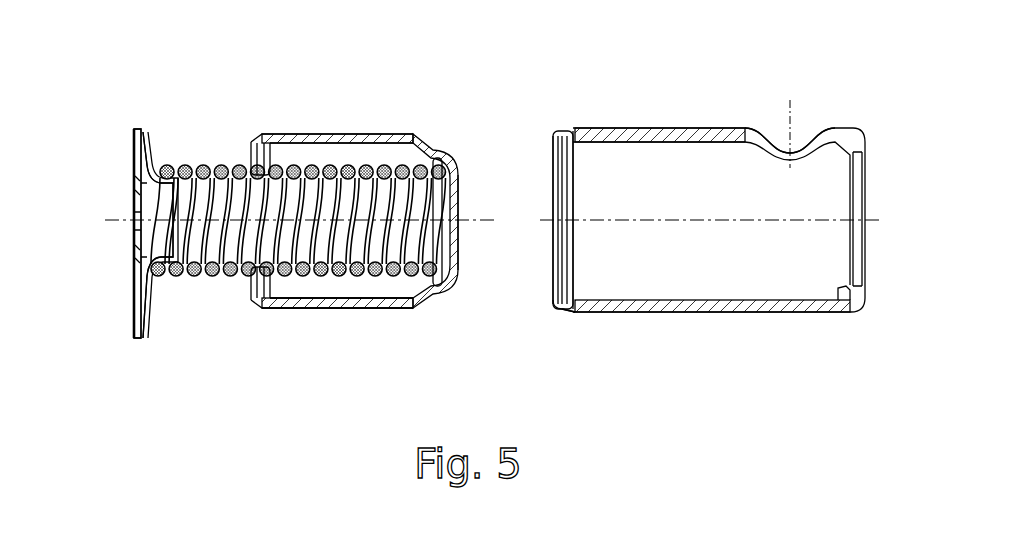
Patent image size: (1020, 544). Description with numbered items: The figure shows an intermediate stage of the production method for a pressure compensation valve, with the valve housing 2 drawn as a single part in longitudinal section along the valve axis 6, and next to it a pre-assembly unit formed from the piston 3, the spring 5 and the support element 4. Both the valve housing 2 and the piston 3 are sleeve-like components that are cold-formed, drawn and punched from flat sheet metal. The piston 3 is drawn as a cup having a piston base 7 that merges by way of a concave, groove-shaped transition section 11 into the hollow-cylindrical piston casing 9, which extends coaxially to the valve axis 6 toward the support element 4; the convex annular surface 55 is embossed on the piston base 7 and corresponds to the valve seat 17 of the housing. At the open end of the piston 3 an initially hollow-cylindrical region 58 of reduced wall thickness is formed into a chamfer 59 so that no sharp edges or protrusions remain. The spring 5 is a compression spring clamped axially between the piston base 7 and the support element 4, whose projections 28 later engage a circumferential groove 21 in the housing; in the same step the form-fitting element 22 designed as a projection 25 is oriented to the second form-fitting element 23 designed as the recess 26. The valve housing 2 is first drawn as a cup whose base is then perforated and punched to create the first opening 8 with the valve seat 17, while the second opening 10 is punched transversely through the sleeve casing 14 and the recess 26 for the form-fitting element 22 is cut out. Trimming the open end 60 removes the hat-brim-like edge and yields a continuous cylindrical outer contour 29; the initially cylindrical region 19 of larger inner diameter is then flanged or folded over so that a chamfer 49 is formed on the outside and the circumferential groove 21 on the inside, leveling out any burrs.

The valve housing 2 is at (690, 208).
The piston 3 is at (332, 238).
The support element 4 is at (152, 140).
The spring 5 is at (222, 152).
The valve axis 6 is at (470, 219).
The piston base 7 is at (459, 266).
The first opening 8 is at (862, 262).
The piston casing 9 is at (325, 310).
The second opening 10 is at (760, 128).
The transition section 11 is at (433, 140).
The sleeve casing 14 is at (673, 128).
The valve seat 17 is at (845, 310).
The cylindrical region 19 is at (553, 308).
The circumferential groove 21 is at (552, 302).
The form-fitting element 22 is at (135, 316).
The second form-fitting element 23 is at (598, 383).
The projection 25 is at (135, 316).
The recess 26 is at (562, 312).
The projections 28 is at (135, 200).
The outer contour 29 is at (716, 312).
The chamfer 49 is at (557, 130).
The annular surface 55 is at (456, 140).
The hollow-cylindrical region 58 is at (255, 310).
The chamfer 59 is at (258, 134).
The open end 60 is at (578, 128).